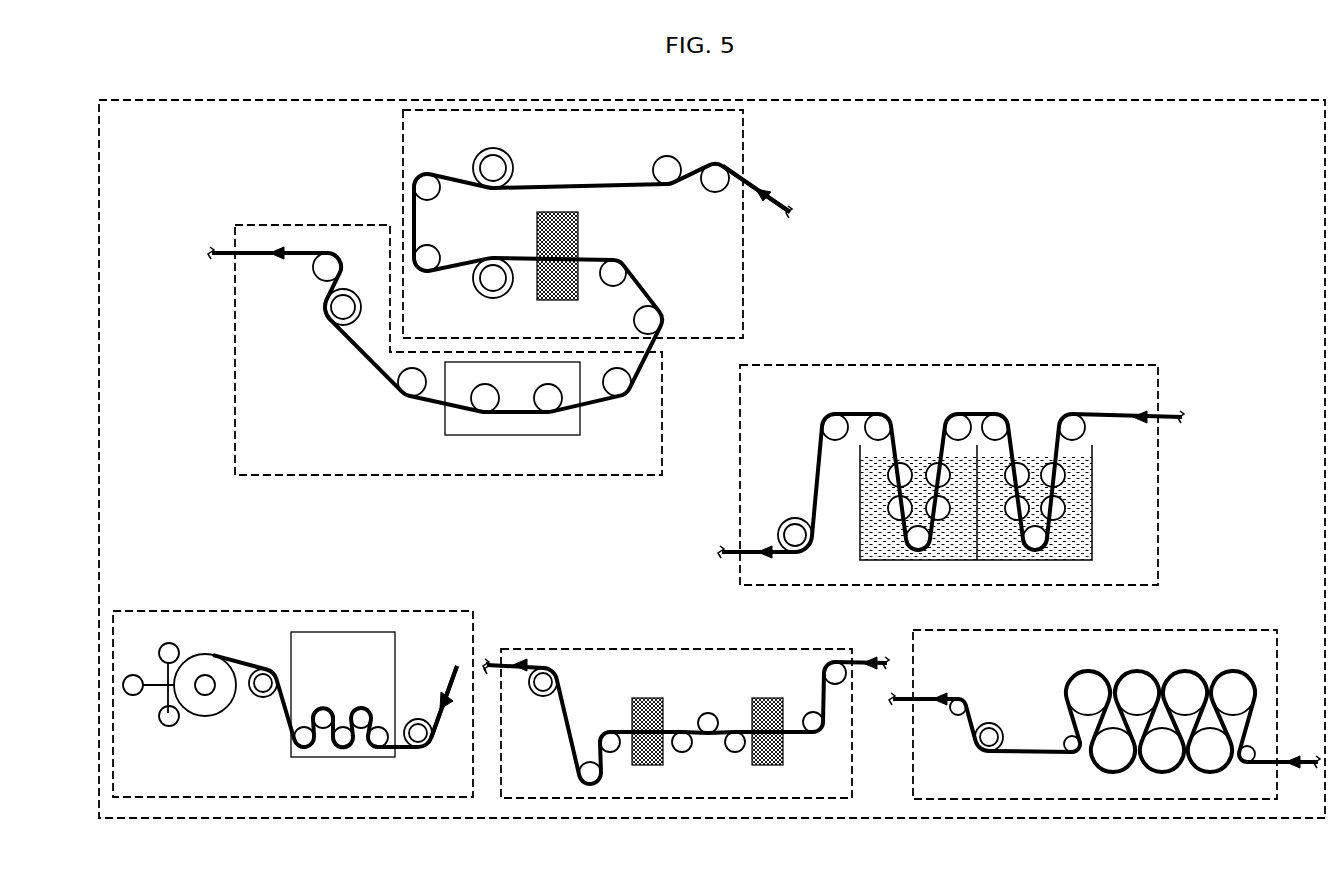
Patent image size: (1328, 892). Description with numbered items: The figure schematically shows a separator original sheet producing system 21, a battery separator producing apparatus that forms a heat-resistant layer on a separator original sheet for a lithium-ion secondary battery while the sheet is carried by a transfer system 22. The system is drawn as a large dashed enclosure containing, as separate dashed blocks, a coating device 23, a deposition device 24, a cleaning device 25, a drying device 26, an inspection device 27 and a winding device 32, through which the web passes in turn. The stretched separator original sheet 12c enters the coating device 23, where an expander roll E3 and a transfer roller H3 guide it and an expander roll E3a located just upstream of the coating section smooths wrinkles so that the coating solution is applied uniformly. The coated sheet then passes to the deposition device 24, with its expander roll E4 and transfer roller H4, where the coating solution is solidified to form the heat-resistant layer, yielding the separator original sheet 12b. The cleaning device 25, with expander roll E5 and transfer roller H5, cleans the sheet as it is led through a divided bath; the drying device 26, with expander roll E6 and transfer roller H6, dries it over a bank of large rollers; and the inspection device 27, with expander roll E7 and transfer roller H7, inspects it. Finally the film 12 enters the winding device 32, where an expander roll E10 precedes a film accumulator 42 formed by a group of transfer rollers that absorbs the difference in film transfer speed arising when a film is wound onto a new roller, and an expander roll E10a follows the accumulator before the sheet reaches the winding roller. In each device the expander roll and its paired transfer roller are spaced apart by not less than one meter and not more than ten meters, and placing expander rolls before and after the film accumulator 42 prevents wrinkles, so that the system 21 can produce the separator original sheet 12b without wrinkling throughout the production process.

The separator original sheet producing system 21 is at (1264, 99).
The transfer system 22 is at (764, 453).
The coating device 23 is at (745, 142).
The deposition device 24 is at (233, 342).
The cleaning device 25 is at (1124, 362).
The drying device 26 is at (1248, 629).
The inspection device 27 is at (824, 649).
The winding device 32 is at (446, 611).
The film accumulator 42 is at (396, 655).
The film web 12 is at (440, 690).
The separator original sheet 12b is at (643, 281).
The separator original sheet 12c is at (704, 163).
The expander roll E3 is at (495, 160).
The expander roll E3a is at (487, 293).
The expander roll E4 is at (326, 321).
The expander roll E5 is at (793, 519).
The expander roll E6 is at (991, 728).
The expander roll E7 is at (544, 696).
The expander roll E10 is at (420, 749).
The expander roll E10a is at (264, 699).
The transfer roller H3 is at (668, 158).
The transfer roller H4 is at (411, 397).
The transfer roller H5 is at (883, 416).
The transfer roller H6 is at (1067, 739).
The transfer roller H7 is at (588, 761).